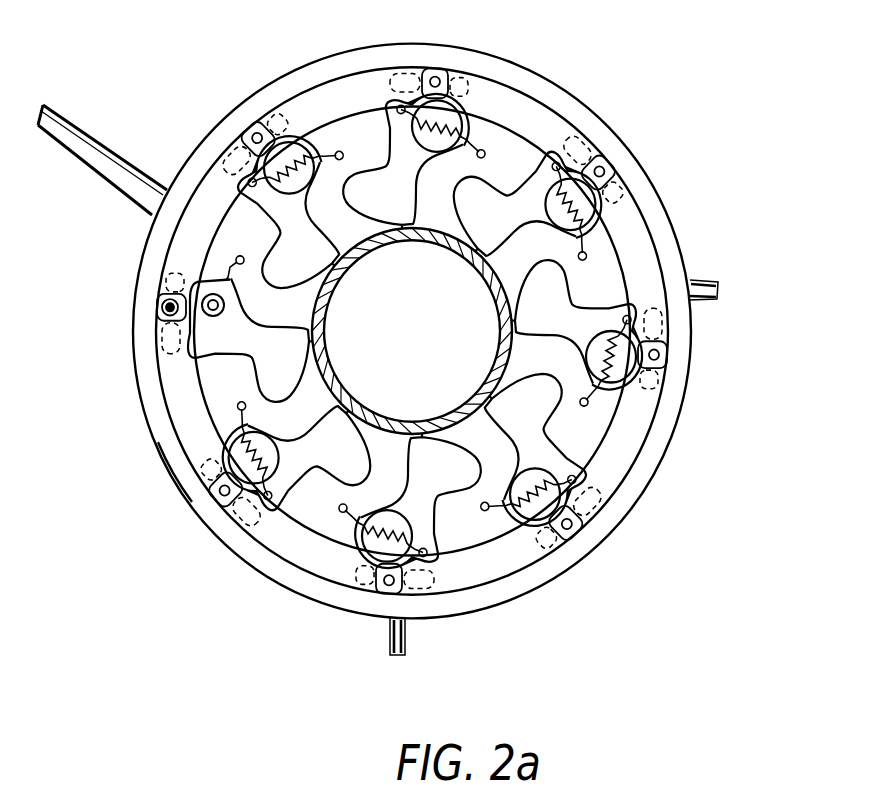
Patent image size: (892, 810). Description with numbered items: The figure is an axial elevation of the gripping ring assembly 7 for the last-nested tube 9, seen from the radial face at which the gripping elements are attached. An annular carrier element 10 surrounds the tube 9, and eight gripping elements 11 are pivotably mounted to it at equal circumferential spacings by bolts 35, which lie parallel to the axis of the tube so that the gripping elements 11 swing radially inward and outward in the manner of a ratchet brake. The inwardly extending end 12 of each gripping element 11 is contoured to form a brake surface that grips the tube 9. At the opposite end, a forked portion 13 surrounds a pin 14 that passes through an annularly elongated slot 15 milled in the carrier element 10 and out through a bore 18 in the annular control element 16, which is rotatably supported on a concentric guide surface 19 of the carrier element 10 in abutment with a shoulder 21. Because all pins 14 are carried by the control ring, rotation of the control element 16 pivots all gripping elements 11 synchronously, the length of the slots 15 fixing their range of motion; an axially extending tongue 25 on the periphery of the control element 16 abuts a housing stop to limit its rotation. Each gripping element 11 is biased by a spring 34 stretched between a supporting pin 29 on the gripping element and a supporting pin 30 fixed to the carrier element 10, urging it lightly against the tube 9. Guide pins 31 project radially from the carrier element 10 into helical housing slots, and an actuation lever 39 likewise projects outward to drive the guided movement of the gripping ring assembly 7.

The gripping ring assembly 7 is at (646, 150).
The last-nested tube 9 is at (490, 248).
The annular carrier element 10 is at (532, 185).
The gripping element 11 is at (586, 132).
The inwardly extending end 12 is at (388, 235).
The forked portion 13 is at (455, 90).
The pin 14 is at (434, 82).
The annularly elongated slot 15 is at (400, 78).
The annular control element 16 is at (325, 565).
The bore 18 is at (162, 311).
The guide surface 19 is at (351, 600).
The shoulder 21 is at (477, 553).
The axially extending tongue 25 is at (180, 490).
The supporting pin 29 is at (395, 100).
The supporting pin 30 is at (510, 148).
The guide pin 31 is at (716, 293).
The spring 34 is at (484, 152).
The bolt 35 is at (208, 296).
The actuation lever 39 is at (108, 154).